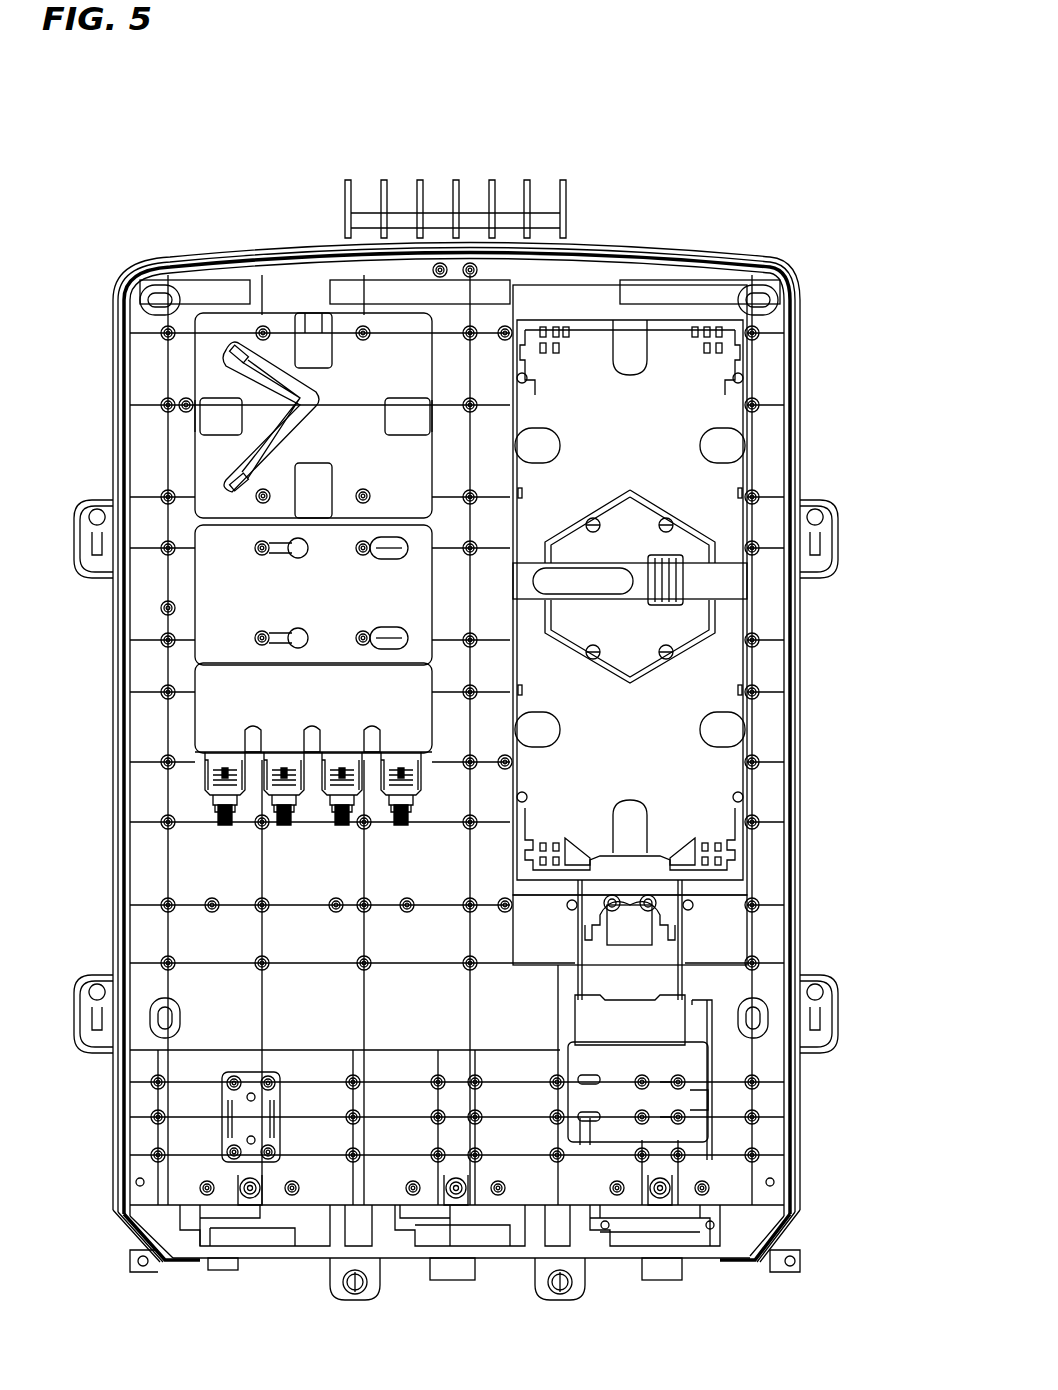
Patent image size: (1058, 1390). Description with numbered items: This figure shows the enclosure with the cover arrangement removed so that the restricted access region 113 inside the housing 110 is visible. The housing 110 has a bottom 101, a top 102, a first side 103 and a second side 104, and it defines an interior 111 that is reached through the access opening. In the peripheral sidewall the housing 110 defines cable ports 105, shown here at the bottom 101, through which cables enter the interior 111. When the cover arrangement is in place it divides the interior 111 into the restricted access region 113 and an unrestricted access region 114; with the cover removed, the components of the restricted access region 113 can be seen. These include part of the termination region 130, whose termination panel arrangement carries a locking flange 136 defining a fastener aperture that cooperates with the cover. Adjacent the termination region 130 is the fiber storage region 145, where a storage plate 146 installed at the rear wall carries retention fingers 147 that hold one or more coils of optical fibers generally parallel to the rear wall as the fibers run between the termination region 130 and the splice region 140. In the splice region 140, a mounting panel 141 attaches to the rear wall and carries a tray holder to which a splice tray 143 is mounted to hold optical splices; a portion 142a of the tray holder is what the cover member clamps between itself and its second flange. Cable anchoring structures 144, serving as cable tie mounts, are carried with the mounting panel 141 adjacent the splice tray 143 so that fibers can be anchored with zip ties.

The bottom 101 is at (600, 1262).
The top 102 is at (648, 248).
The first side 103 is at (806, 748).
The second side 104 is at (105, 685).
The cable port 105 is at (230, 1258).
The housing 110 is at (803, 1123).
The interior 111 is at (730, 1133).
The restricted access region 113 is at (488, 604).
The unrestricted access region 114 is at (432, 1036).
The termination region 130 is at (200, 783).
The locking flange 136 is at (301, 716).
The splice region 140 is at (753, 465).
The mounting panel 141 is at (720, 925).
The portion of the tray holder 142a is at (656, 1044).
The splice tray 143 is at (648, 766).
The cable anchoring structure 144 is at (608, 563).
The fiber storage region 145 is at (203, 388).
The storage plate 146 is at (363, 419).
The retention fingers 147 is at (322, 348).